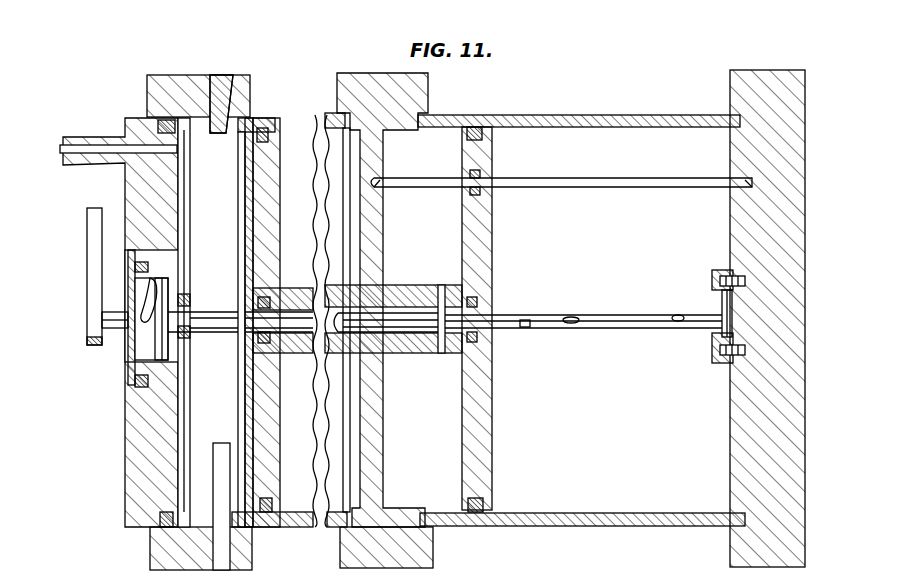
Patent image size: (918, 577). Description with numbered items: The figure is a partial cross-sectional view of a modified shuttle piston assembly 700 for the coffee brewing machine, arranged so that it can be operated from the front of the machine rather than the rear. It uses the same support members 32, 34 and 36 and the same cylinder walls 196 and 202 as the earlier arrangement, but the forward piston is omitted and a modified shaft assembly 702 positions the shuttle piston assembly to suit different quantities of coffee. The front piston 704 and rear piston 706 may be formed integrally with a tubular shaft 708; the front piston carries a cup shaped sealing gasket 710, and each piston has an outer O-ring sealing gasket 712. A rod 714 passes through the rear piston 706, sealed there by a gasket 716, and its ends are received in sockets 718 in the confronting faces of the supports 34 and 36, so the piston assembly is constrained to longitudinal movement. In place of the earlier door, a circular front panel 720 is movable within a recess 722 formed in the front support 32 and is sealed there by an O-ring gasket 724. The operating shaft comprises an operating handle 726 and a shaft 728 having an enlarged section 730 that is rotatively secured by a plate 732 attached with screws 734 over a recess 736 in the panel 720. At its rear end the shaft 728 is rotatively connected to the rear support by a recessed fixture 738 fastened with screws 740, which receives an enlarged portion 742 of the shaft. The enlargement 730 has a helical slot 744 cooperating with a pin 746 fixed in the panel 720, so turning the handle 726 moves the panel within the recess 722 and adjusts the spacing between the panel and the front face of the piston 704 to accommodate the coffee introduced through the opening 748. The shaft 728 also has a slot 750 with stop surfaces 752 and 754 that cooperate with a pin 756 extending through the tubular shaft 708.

The support member 36 is at (750, 546).
The cylinder wall 202 is at (596, 528).
The support member 34 is at (415, 553).
The support member 32 is at (165, 545).
The recess 722 is at (197, 118).
The opening 748 is at (214, 85).
The O-ring gasket 724 is at (163, 122).
The circular front panel 720 is at (140, 458).
The operating handle 726 is at (95, 266).
The helical slot 744 is at (147, 303).
The enlarged section 730 is at (145, 343).
The plate 732 is at (132, 378).
The screws 734 is at (136, 392).
The recess 736 is at (146, 298).
The pin 746 is at (166, 278).
The shaft 728 is at (213, 312).
The front piston 704 is at (272, 250).
The cup shaped sealing gasket 710 is at (248, 390).
The cylinder wall 196 is at (333, 528).
The tubular shaft 708 is at (400, 356).
The pin 756 is at (447, 293).
The shuttle piston assembly 700 is at (511, 318).
The rear piston 706 is at (492, 412).
The gasket 716 is at (474, 172).
The O-ring sealing gaskets 712 is at (260, 513).
The rod 714 is at (557, 178).
The sockets 718 is at (405, 172).
The shaft assembly 702 is at (544, 311).
The stop surface 754 is at (668, 316).
The stop surface 752 is at (575, 323).
The slot 750 is at (526, 327).
The enlarged portion 742 is at (724, 318).
The recessed fixture 738 is at (715, 292).
The screws 740 is at (716, 352).